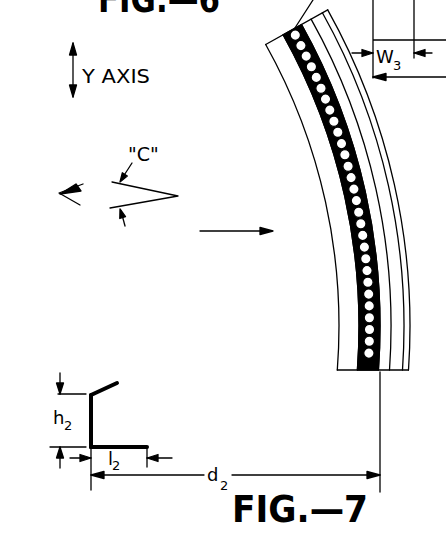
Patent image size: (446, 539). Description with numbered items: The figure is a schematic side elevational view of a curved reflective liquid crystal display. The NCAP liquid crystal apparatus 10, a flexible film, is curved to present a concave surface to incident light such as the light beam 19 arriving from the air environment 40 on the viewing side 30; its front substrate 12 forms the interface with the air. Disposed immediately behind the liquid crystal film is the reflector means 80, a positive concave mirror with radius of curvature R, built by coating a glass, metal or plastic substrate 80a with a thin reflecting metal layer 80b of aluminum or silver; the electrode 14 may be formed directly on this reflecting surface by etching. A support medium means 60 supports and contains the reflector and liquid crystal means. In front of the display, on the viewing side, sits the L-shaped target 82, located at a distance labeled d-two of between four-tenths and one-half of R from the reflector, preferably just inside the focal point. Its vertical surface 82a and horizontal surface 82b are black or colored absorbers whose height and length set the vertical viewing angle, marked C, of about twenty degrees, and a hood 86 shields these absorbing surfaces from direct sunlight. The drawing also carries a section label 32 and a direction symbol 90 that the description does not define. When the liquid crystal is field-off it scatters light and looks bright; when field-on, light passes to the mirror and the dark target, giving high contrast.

The liquid crystal apparatus 10 is at (290, 32).
The substrate 12 is at (283, 34).
The second electrode 14 is at (372, 370).
The light beam 19 is at (220, 231).
The viewing area or side 30 is at (125, 261).
The straight track section 32 is at (420, 387).
The air environment 40 is at (245, 53).
The support medium means 60 is at (348, 307).
The reflector means 80 is at (335, 212).
The substrate 80a is at (363, 98).
The reflecting metal layer 80b is at (377, 178).
The target 82 is at (96, 406).
The vertical surface 82a is at (97, 421).
The horizontal surface 82b is at (147, 447).
The hood 86 is at (106, 387).
The viewing direction indicator 90 is at (61, 191).